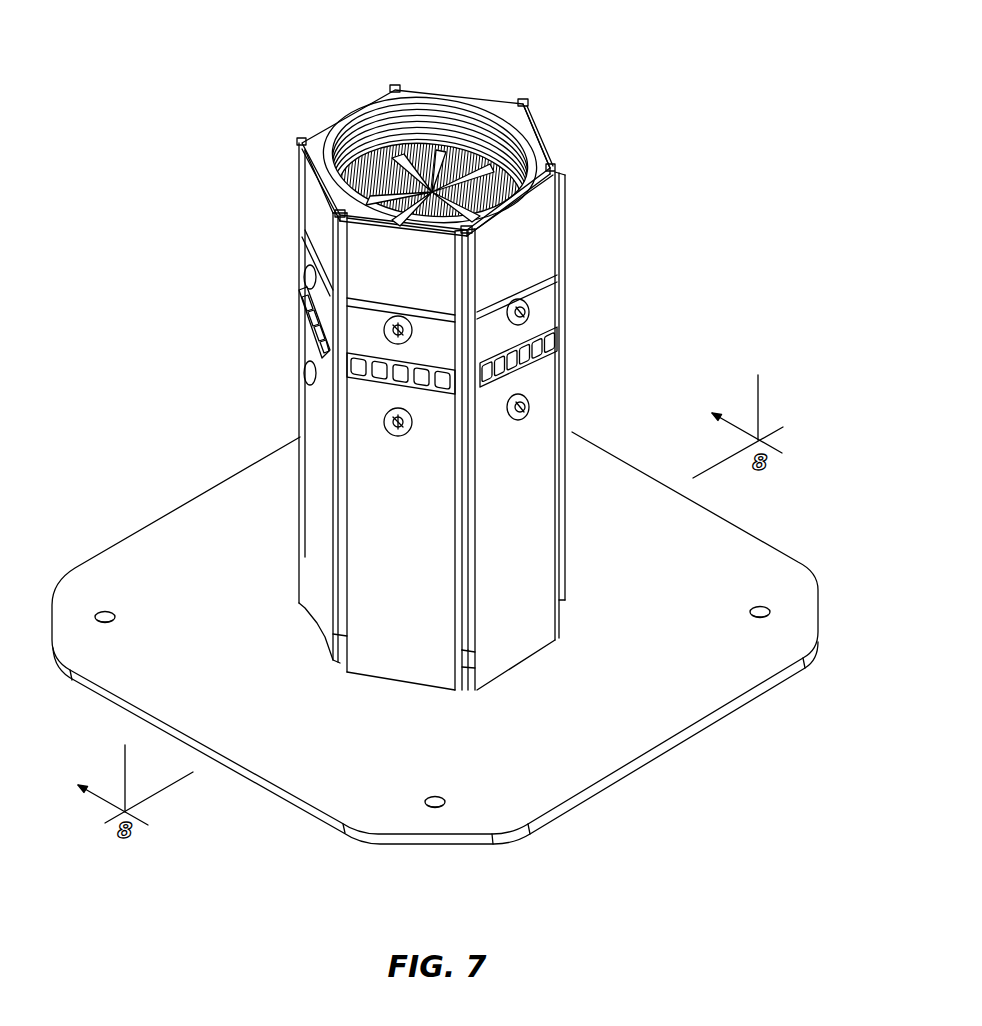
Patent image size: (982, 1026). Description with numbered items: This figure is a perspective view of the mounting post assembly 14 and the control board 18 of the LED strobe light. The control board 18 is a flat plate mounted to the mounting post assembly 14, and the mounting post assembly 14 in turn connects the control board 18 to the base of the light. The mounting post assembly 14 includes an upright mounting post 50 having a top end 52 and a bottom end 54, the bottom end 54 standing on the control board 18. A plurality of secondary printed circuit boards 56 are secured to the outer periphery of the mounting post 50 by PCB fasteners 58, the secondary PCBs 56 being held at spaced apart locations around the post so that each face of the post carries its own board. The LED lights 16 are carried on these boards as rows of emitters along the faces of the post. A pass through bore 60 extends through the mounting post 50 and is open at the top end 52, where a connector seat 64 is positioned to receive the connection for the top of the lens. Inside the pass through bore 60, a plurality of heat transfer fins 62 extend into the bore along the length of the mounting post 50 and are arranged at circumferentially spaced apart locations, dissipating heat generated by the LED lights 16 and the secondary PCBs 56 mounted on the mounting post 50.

The mounting post assembly 14 is at (574, 215).
The LED lights 16 is at (487, 388).
The control board 18 is at (745, 526).
The mounting post 50 is at (533, 97).
The top end 52 is at (553, 170).
The bottom end 54 is at (463, 648).
The secondary printed circuit boards 56 is at (430, 553).
The PCB fasteners 58 is at (524, 314).
The pass through bore 60 is at (443, 163).
The heat transfer fins 62 is at (418, 168).
The connector seat 64 is at (425, 112).